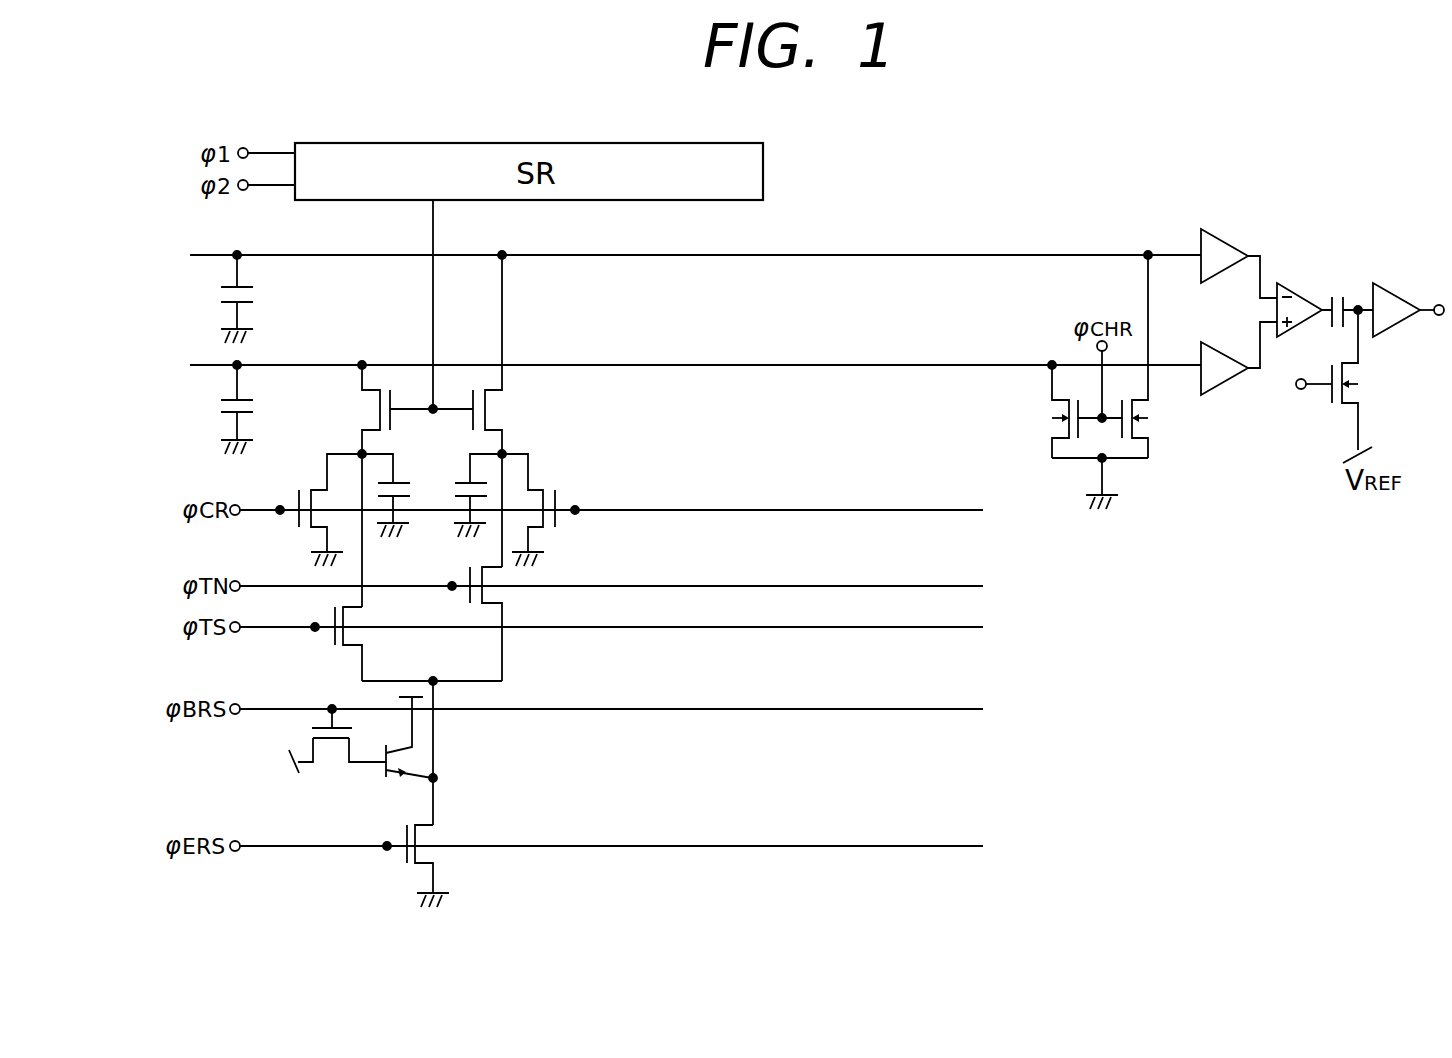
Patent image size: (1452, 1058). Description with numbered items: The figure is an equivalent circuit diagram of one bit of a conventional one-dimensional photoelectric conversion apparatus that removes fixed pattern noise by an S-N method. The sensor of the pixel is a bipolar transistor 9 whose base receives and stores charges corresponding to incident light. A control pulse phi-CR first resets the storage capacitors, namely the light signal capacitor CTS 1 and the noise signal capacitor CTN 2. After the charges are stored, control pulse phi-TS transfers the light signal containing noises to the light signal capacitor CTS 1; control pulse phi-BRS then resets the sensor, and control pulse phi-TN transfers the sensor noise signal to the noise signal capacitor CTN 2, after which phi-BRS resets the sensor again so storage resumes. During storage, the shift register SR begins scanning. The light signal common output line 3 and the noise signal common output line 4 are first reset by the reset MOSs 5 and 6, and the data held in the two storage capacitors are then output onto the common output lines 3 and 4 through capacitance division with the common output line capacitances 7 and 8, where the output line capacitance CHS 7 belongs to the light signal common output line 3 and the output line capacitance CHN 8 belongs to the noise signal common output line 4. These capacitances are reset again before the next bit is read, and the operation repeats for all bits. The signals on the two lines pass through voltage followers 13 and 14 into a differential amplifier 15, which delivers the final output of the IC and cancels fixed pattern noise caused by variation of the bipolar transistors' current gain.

The light signal capacitor CTS 1 is at (404, 480).
The noise signal capacitor CTN 2 is at (462, 480).
The light signal common output line 3 is at (769, 365).
The noise signal common output line 4 is at (843, 255).
The reset MOS 5 is at (1052, 428).
The reset MOS 6 is at (1148, 428).
The output line capacitance CHS 7 is at (256, 406).
The output line capacitance CHN 8 is at (256, 296).
The bipolar transistor 9 is at (402, 758).
The voltage follower 13 is at (1226, 228).
The voltage follower 14 is at (1236, 392).
The differential amplifier 15 is at (1299, 285).